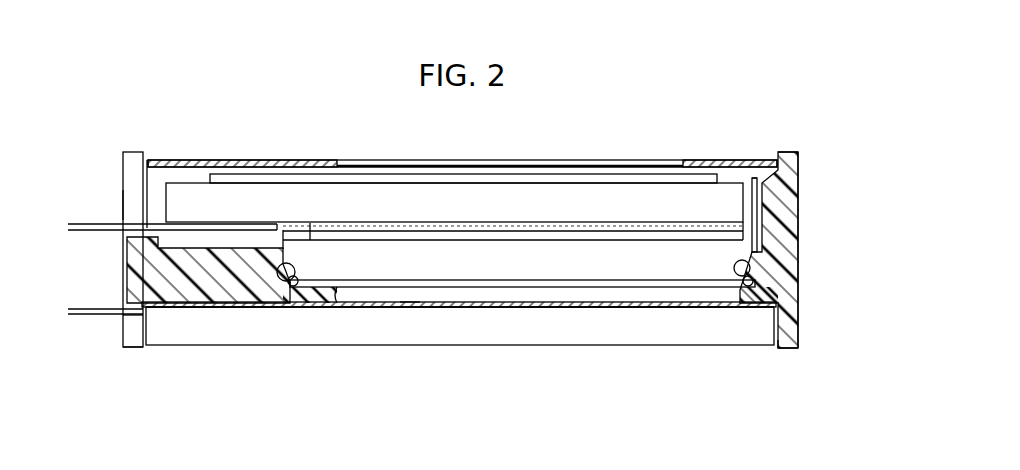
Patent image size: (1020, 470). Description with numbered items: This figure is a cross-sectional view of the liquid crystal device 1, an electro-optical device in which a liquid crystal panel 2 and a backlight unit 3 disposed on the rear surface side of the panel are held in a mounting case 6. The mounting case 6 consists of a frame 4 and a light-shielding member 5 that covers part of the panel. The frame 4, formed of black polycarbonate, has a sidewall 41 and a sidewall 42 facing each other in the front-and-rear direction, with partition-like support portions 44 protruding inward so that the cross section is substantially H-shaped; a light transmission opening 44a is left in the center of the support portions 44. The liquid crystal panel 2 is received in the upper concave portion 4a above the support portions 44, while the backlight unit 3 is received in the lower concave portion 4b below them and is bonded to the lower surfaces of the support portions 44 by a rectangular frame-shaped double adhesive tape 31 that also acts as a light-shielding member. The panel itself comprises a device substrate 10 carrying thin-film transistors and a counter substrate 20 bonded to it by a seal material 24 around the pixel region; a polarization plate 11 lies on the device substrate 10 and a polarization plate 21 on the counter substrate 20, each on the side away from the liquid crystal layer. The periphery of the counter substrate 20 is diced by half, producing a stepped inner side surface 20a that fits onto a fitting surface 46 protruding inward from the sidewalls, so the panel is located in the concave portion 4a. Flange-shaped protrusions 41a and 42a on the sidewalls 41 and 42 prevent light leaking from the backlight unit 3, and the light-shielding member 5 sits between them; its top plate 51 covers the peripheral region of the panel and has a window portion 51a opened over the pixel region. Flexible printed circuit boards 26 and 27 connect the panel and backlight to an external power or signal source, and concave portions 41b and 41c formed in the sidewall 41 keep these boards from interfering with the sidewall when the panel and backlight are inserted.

The liquid crystal device 1 is at (168, 110).
The liquid crystal panel 2 is at (372, 178).
The backlight unit 3 is at (600, 326).
The frame 4 is at (808, 185).
The concave portion 4a is at (753, 190).
The concave portion 4b is at (773, 332).
The light-shielding member 5 is at (270, 160).
The mounting case 6 is at (211, 155).
The device substrate 10 is at (430, 200).
The polarization plate 11 is at (568, 177).
The counter substrate 20 is at (485, 263).
The inner side surface 20a is at (285, 263).
The polarization plate 21 is at (545, 287).
The seal material 24 is at (500, 228).
The flexible printed circuit board 26 is at (90, 233).
The flexible printed circuit board 27 is at (85, 317).
The double adhesive tape 31 is at (193, 308).
The sidewall 41 is at (127, 170).
The protrusion 41a is at (135, 344).
The concave portion 41b is at (127, 206).
The concave portion 41c is at (130, 322).
The sidewall 42 is at (782, 210).
The protrusion 42a is at (782, 158).
The support portion 44 is at (338, 308).
The light transmission opening 44a is at (410, 308).
The fitting surface 46 is at (281, 305).
The top plate 51 is at (716, 161).
The window portion 51a is at (688, 161).